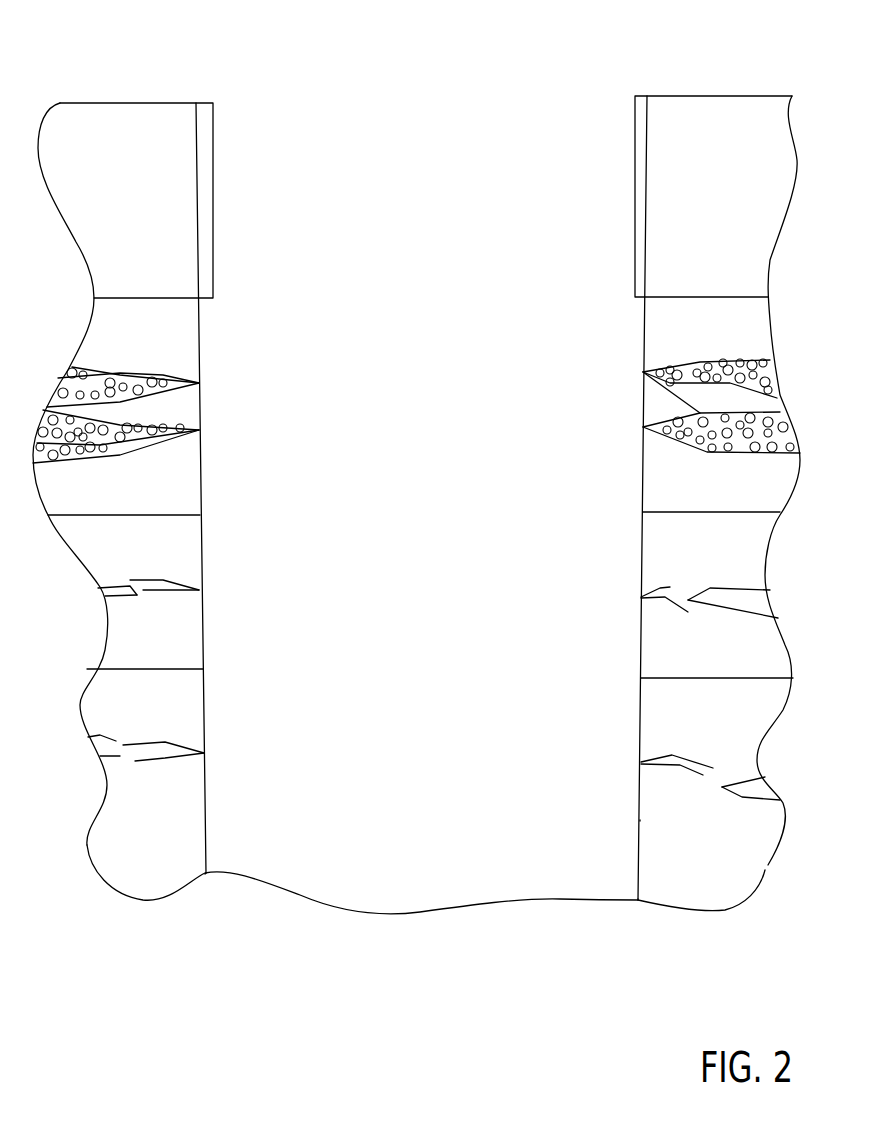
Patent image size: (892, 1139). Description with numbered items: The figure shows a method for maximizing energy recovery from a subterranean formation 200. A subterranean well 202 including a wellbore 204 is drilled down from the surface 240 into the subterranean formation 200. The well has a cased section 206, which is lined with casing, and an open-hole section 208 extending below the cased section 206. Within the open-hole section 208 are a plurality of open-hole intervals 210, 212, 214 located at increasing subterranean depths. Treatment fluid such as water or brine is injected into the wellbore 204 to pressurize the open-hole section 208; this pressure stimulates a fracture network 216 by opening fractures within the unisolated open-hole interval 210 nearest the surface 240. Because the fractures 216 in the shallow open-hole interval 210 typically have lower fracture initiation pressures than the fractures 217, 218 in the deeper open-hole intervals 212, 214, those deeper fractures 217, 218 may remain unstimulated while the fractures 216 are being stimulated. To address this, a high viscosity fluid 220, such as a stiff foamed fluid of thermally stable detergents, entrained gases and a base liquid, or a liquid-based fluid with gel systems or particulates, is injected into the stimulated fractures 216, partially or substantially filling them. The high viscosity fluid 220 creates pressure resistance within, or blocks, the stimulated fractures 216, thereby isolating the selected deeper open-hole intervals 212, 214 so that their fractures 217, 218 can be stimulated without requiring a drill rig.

The subterranean formation 200 is at (170, 893).
The subterranean well 202 is at (348, 68).
The wellbore 204 is at (505, 100).
The cased section 206 is at (240, 205).
The open-hole section 208 is at (362, 393).
The open-hole interval 210 is at (647, 325).
The open-hole interval 212 is at (650, 540).
The open-hole interval 214 is at (645, 712).
The fracture network 216 is at (643, 372).
The fractures 217 is at (641, 598).
The fractures 218 is at (641, 762).
The high viscosity fluid 220 is at (643, 427).
The surface 240 is at (700, 96).